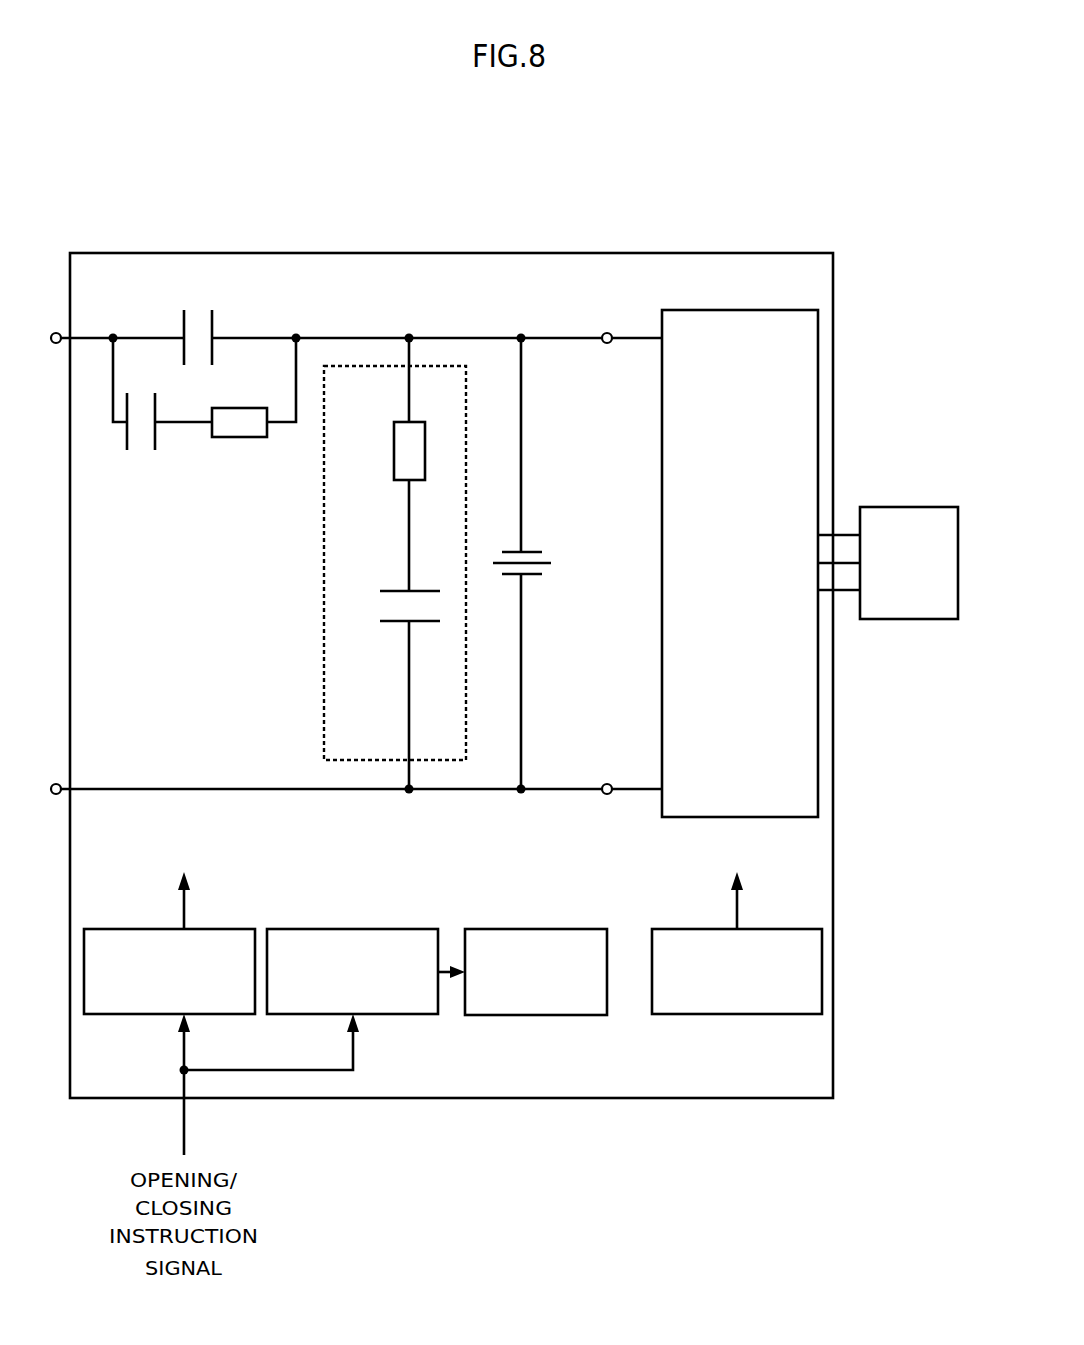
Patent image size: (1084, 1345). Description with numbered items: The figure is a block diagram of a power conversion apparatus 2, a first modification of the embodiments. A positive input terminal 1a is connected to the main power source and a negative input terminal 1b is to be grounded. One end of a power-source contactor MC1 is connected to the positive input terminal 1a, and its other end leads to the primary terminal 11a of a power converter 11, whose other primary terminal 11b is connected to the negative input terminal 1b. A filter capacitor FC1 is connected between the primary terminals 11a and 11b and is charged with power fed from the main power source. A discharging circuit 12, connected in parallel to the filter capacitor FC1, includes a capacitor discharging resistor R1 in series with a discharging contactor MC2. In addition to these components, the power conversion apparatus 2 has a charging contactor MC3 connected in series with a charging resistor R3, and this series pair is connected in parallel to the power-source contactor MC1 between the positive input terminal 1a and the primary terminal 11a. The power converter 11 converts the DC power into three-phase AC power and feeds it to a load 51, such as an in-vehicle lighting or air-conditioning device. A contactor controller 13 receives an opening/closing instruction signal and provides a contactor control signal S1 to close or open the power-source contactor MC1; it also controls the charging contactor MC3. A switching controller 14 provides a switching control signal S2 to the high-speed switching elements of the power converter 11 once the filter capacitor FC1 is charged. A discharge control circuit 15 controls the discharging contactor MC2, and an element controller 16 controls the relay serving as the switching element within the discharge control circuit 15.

The power conversion apparatus 2 is at (587, 253).
The positive input terminal 1a is at (56, 333).
The negative input terminal 1b is at (56, 783).
The power converter 11 is at (662, 620).
The primary terminal 11a is at (607, 344).
The primary terminal 11b is at (607, 783).
The discharging circuit 12 is at (324, 713).
The contactor controller 13 is at (160, 929).
The switching controller 14 is at (652, 1012).
The discharge control circuit 15 is at (607, 940).
The element controller 16 is at (355, 929).
The load 51 is at (880, 507).
The power-source contactor MC1 is at (212, 350).
The discharging contactor MC2 is at (383, 622).
The charging contactor MC3 is at (155, 440).
The capacitor discharging resistor R1 is at (394, 450).
The charging resistor R3 is at (237, 437).
The filter capacitor FC1 is at (522, 552).
The contactor control signal S1 is at (184, 915).
The switching control signal S2 is at (737, 912).